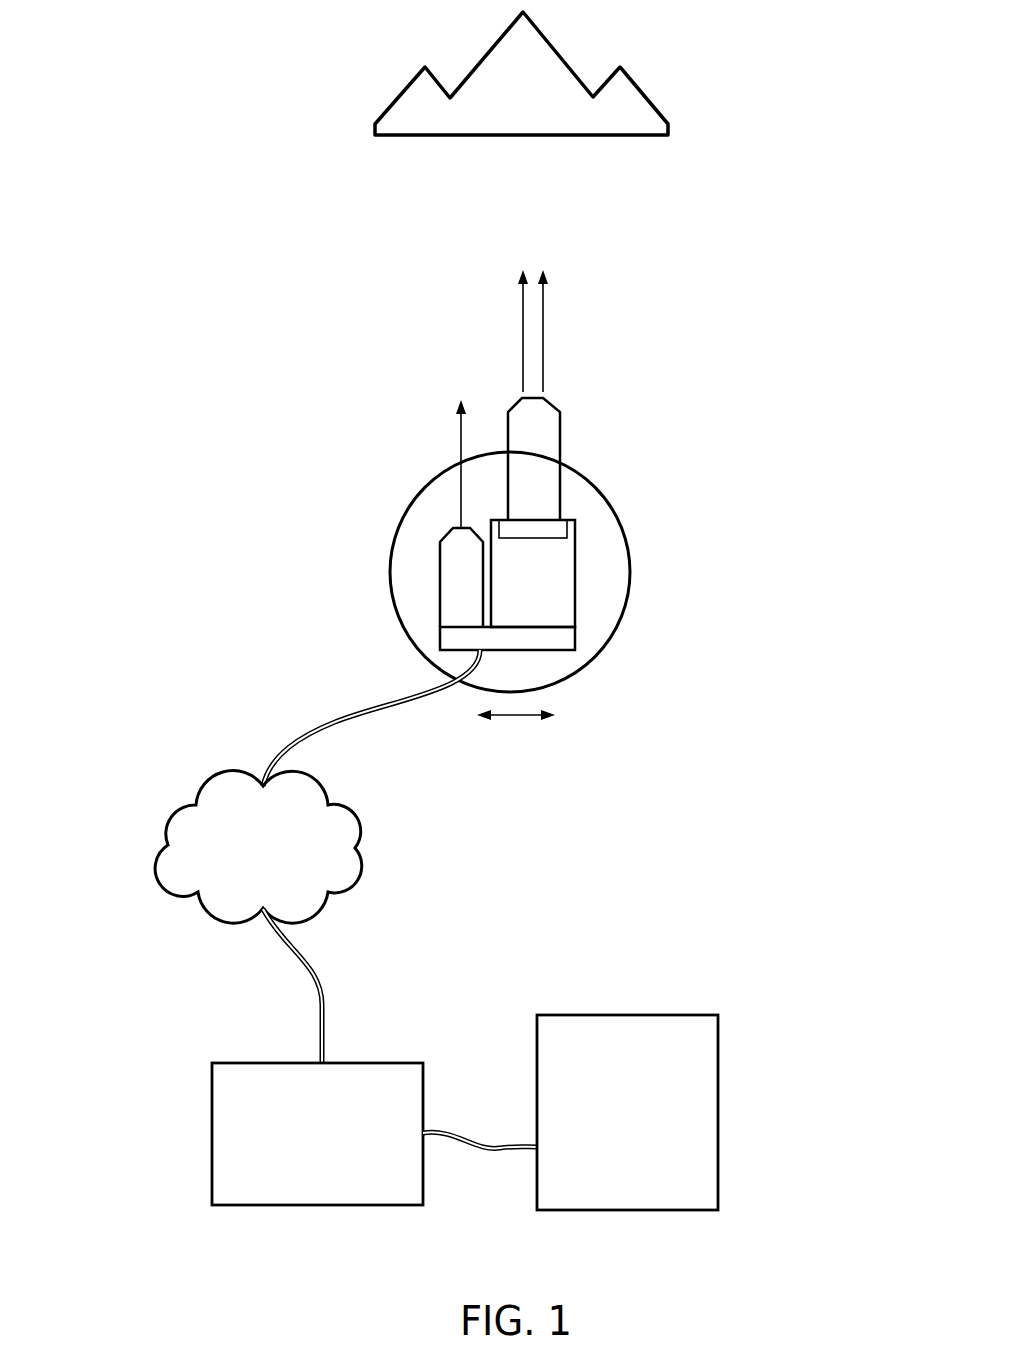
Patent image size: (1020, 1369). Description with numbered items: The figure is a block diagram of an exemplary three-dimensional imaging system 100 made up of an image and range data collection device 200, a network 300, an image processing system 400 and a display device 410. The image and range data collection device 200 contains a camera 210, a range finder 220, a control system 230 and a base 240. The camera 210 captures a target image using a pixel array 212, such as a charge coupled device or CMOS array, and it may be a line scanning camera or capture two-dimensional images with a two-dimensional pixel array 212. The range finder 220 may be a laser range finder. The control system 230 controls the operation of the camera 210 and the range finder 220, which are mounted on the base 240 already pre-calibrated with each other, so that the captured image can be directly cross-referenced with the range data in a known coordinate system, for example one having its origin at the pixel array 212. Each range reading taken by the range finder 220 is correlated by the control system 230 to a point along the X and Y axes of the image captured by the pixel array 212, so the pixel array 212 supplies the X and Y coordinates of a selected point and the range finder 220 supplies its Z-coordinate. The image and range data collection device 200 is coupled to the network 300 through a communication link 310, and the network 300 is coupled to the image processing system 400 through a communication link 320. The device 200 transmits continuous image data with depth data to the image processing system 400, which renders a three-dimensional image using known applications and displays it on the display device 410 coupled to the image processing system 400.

The 3-D imaging system 100 is at (226, 280).
The image and range data collection device 200 is at (399, 425).
The camera 210 is at (543, 592).
The pixel array 212 is at (557, 532).
The range finder 220 is at (448, 563).
The control system 230 is at (567, 637).
The base 240 is at (406, 602).
The network 300 is at (166, 832).
The communication link 310 is at (333, 722).
The communication link 320 is at (318, 982).
The image processing system 400 is at (212, 1100).
The display device 410 is at (718, 1097).